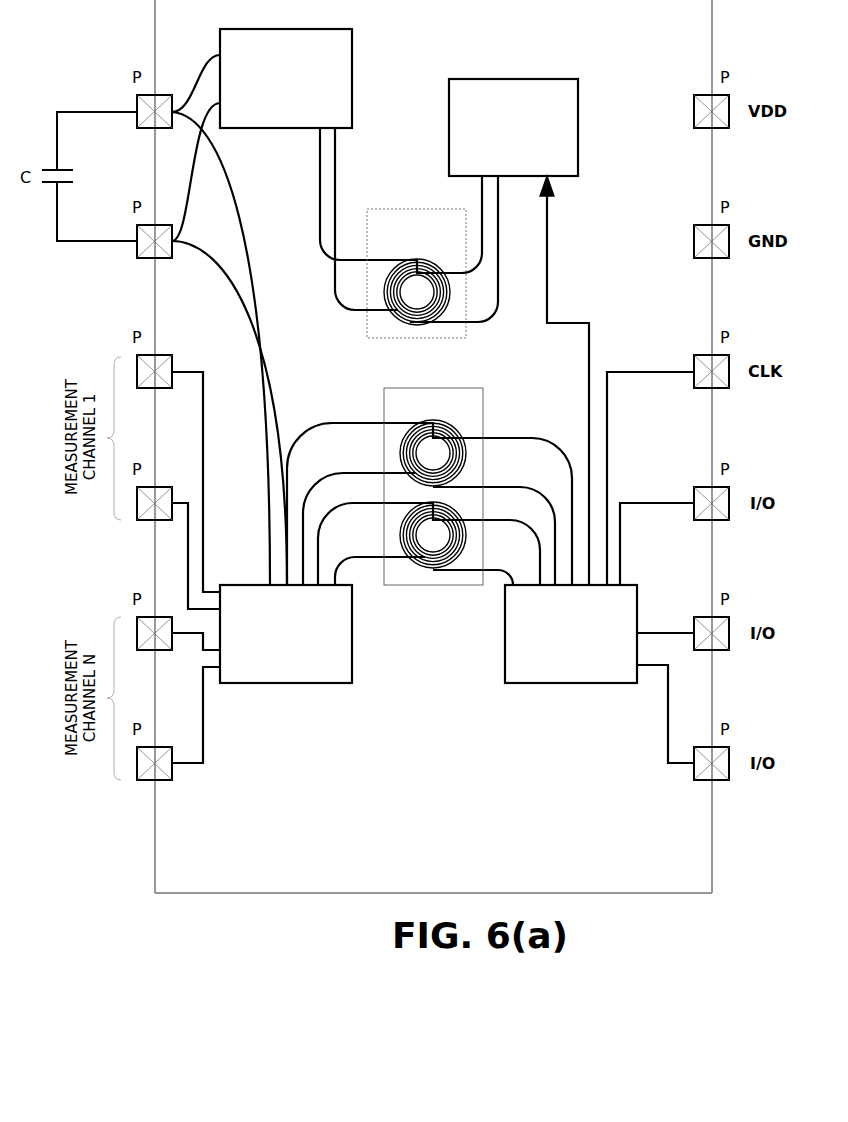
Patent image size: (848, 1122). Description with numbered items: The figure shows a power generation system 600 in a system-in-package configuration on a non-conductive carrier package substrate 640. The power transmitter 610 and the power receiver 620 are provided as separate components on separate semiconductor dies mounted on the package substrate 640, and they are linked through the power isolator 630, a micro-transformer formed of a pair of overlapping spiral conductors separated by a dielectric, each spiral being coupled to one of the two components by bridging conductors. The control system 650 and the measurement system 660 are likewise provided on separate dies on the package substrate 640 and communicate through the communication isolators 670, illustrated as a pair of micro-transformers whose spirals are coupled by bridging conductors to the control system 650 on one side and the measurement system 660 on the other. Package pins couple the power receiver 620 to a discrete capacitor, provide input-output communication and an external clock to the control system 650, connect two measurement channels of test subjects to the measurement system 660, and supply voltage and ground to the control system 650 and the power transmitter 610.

The power generation system 600 is at (433, 490).
The power transmitter 610 is at (513, 127).
The power receiver 620 is at (286, 78).
The power isolator 630 is at (416, 273).
The package substrate 640 is at (433, 446).
The control system 650 is at (571, 634).
The measurement system 660 is at (286, 634).
The communication isolators 670 is at (433, 486).